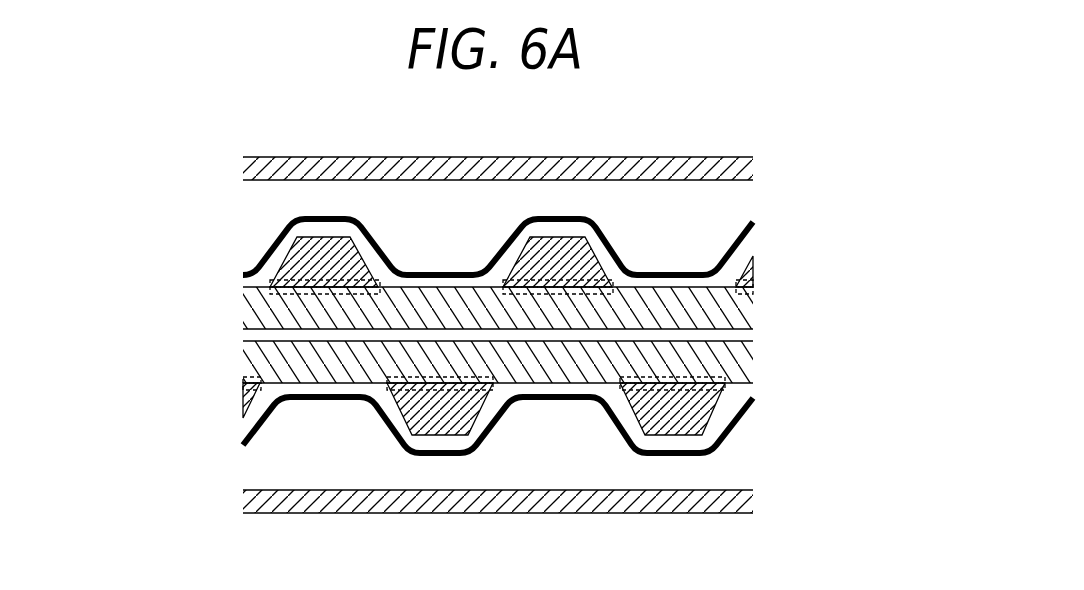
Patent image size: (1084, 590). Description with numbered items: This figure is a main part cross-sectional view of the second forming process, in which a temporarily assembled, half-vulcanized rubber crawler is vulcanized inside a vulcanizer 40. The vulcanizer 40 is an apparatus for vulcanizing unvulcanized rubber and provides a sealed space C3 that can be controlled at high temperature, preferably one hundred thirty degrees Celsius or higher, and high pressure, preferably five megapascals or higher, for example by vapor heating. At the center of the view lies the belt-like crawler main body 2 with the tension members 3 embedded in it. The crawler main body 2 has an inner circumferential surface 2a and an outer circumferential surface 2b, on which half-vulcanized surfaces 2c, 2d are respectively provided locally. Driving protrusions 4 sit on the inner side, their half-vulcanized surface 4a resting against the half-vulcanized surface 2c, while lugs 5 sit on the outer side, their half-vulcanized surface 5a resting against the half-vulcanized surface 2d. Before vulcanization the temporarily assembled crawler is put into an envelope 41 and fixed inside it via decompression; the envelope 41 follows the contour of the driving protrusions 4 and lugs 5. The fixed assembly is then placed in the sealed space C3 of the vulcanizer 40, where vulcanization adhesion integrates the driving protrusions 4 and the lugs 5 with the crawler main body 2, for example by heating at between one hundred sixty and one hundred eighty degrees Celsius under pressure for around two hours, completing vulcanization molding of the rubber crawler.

The vulcanizer 40 is at (658, 141).
The envelope 41 is at (608, 243).
The crawler main body 2 is at (755, 309).
The tension members 3 is at (740, 335).
The driving protrusions 4 is at (323, 243).
The lugs 5 is at (437, 440).
The inner circumferential surface 2a is at (432, 287).
The outer circumferential surface 2b is at (322, 383).
The half-vulcanized surface 2c is at (298, 288).
The half-vulcanized surface 2d is at (470, 372).
The half-vulcanized surface 4a is at (296, 266).
The half-vulcanized surface 5a is at (396, 415).
The sealed space C3 is at (581, 454).